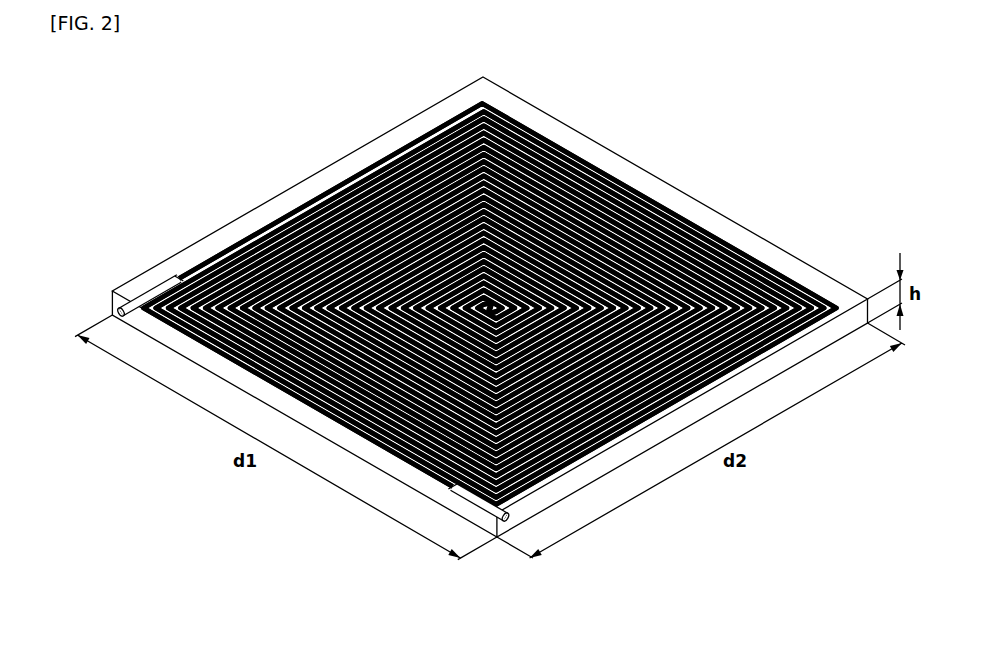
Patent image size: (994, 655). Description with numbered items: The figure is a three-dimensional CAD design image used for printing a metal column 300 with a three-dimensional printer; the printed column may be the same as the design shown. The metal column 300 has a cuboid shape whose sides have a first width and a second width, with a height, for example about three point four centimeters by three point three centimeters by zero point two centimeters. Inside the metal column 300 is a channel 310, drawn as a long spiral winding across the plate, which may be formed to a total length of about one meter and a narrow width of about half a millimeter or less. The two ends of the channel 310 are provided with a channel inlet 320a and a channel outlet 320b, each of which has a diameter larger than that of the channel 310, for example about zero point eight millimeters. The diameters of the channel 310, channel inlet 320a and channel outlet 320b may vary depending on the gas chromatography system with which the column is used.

The metal column 300 is at (718, 139).
The channel 310 is at (380, 157).
The channel inlet 320a is at (152, 290).
The channel outlet 320b is at (475, 508).